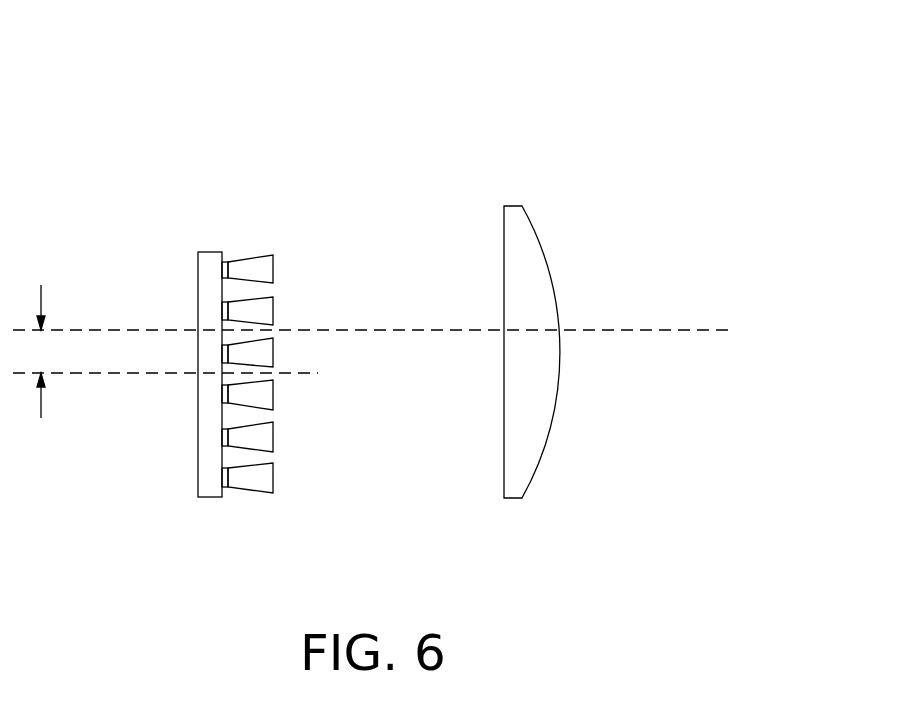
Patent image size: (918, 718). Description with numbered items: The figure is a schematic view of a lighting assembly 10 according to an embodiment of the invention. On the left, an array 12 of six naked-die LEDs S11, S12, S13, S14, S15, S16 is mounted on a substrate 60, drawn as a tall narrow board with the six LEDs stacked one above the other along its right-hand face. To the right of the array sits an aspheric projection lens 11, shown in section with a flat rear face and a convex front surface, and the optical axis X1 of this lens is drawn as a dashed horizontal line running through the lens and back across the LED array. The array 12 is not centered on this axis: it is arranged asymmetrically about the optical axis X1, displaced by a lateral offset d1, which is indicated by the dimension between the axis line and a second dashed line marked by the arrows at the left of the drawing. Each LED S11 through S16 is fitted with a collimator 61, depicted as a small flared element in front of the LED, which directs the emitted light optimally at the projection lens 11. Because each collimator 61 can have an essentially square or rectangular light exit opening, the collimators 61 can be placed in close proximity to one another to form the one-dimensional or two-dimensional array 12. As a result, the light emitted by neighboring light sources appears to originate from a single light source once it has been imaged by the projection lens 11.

The lighting assembly 10 is at (480, 138).
The aspheric projection lens 11 is at (522, 242).
The array 12 is at (243, 383).
The substrate 60 is at (203, 498).
The collimator 61 is at (203, 235).
The naked-die LED S11 is at (192, 267).
The naked-die LED S12 is at (227, 312).
The naked-die LED S13 is at (227, 355).
The naked-die LED S14 is at (228, 396).
The naked-die LED S15 is at (228, 434).
The naked-die LED S16 is at (192, 476).
The optical axis X1 is at (681, 333).
The lateral offset d1 is at (165, 351).